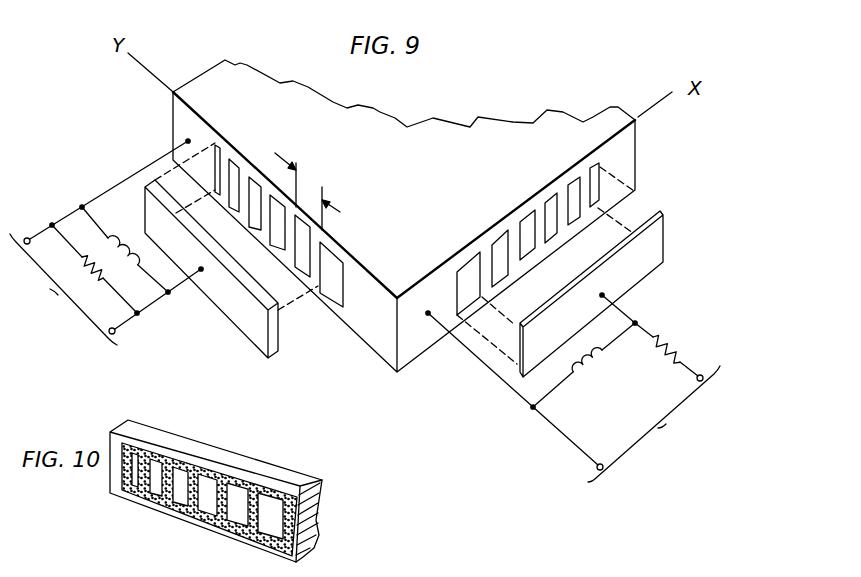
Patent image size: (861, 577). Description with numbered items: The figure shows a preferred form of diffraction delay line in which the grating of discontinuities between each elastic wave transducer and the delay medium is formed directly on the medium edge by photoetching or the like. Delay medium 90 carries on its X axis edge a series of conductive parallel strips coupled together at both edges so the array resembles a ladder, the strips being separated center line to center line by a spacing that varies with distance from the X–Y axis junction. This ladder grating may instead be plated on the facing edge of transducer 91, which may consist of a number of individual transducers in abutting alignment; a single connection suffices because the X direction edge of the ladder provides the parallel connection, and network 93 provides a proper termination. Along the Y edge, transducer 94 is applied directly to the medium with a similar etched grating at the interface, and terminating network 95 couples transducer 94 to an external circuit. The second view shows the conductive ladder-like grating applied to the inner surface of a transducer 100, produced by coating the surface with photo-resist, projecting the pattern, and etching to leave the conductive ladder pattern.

In FIG. 9, the delay medium 90 is at (584, 123).
In FIG. 9, the transducer 91 is at (653, 244).
In FIG. 9, the network 93 is at (648, 398).
In FIG. 9, the transducer 94 is at (257, 333).
In FIG. 9, the terminating network 95 is at (100, 255).
In FIG. 10, the transducer 100 is at (273, 472).